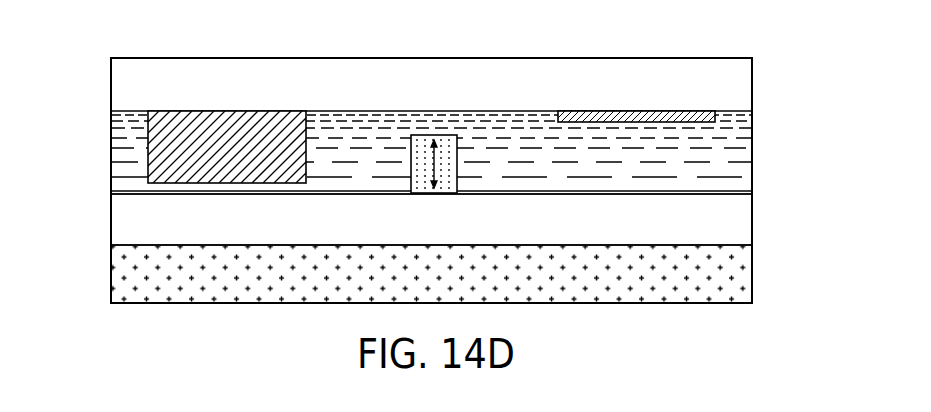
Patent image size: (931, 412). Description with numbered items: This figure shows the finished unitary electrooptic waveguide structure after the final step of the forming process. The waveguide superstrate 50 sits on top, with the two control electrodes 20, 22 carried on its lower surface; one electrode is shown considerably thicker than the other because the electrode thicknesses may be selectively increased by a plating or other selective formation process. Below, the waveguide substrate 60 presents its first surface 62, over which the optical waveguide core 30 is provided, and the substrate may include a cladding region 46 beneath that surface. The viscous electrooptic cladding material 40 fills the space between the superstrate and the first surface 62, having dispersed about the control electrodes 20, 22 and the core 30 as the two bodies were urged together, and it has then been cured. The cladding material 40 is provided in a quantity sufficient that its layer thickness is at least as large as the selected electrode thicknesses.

The waveguide superstrate 50 is at (752, 73).
The electrooptic cladding material 40 is at (752, 150).
The control electrode 20 is at (148, 155).
The control electrode 22 is at (672, 116).
The optical waveguide core 30 is at (444, 196).
The first surface of the waveguide substrate 62 is at (738, 191).
The cladding region 46 is at (746, 213).
The waveguide substrate 60 is at (746, 266).